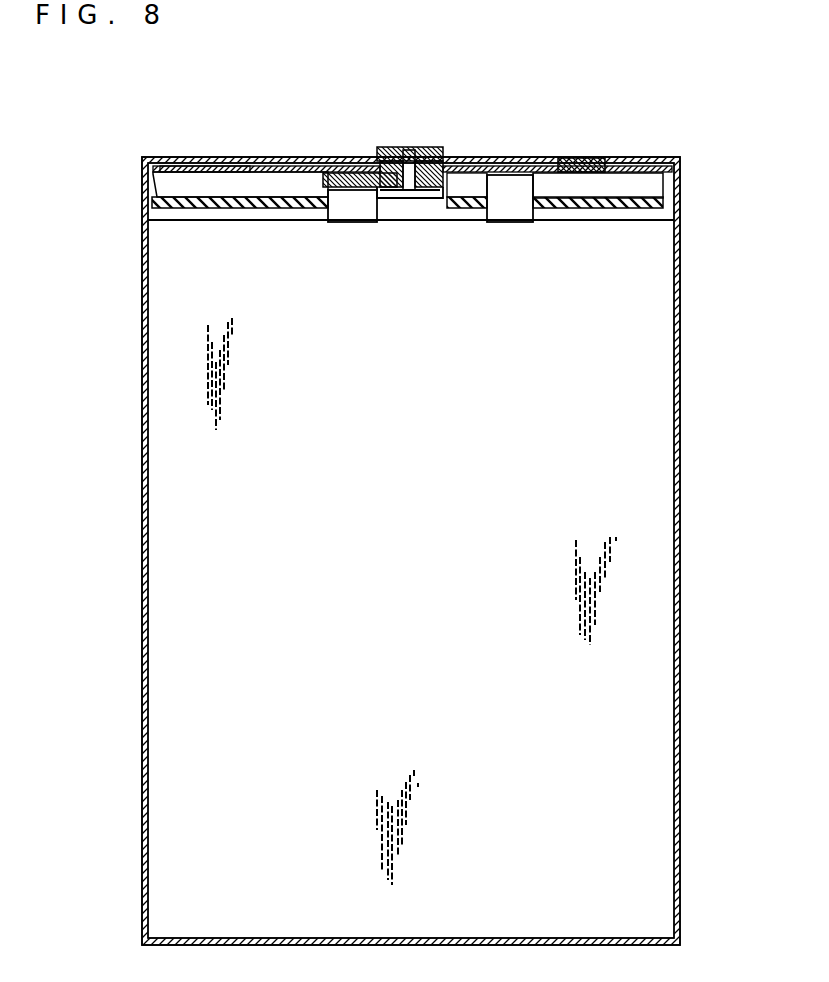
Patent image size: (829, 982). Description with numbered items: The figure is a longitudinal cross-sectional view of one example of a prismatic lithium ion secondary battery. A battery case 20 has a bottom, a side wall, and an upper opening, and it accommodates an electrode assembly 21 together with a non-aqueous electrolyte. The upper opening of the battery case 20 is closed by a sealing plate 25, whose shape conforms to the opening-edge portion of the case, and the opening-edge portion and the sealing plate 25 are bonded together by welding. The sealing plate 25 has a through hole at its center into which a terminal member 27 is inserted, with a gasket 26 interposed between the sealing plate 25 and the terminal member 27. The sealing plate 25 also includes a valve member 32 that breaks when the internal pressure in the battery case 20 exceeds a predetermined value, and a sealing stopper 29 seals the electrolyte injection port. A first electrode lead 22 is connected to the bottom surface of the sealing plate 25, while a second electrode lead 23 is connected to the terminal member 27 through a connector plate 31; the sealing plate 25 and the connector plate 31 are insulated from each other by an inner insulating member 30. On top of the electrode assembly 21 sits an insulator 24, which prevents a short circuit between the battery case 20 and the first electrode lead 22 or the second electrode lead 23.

The battery case 20 is at (676, 312).
The electrode assembly 21 is at (623, 497).
The first electrode lead 22 is at (510, 192).
The second electrode lead 23 is at (340, 207).
The insulator 24 is at (668, 181).
The sealing plate 25 is at (214, 167).
The gasket 26 is at (375, 158).
The terminal member 27 is at (407, 147).
The sealing stopper 29 is at (583, 159).
The inner insulating member 30 is at (452, 178).
The connector plate 31 is at (448, 186).
The valve member 32 is at (241, 166).